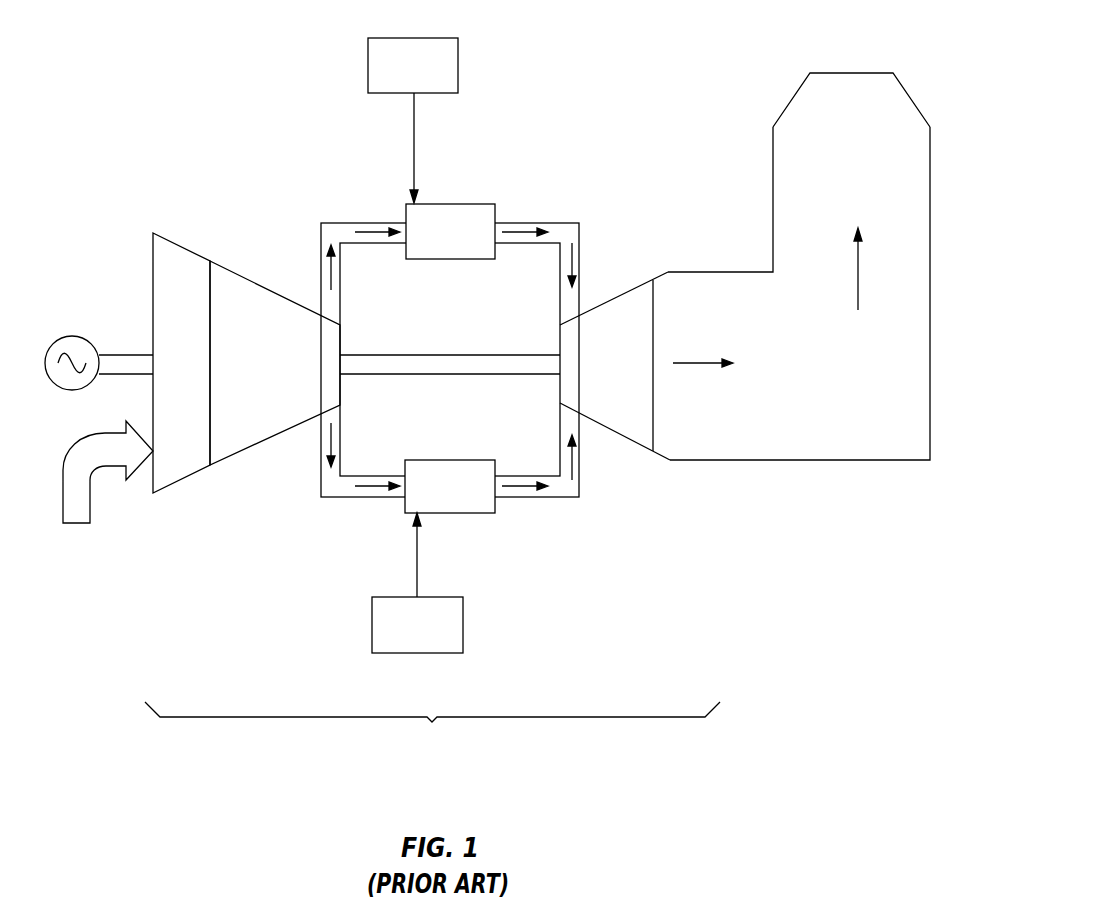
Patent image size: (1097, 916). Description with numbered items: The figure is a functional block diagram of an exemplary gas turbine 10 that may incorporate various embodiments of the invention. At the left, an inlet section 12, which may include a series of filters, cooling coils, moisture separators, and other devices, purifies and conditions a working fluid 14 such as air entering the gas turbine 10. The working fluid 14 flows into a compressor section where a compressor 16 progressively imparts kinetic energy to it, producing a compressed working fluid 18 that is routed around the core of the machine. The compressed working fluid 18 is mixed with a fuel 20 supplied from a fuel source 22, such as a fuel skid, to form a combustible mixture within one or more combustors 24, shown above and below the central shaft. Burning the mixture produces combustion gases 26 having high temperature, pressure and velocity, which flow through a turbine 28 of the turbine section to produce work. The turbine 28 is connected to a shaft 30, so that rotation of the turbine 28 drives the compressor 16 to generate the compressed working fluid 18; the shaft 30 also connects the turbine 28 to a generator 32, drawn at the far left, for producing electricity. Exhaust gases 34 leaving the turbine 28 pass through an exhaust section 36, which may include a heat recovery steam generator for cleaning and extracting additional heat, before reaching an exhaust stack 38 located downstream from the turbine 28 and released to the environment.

The gas turbine 10 is at (432, 728).
The inlet section 12 is at (200, 373).
The working fluid 14 is at (72, 525).
The compressor 16 is at (281, 367).
The compressed working fluid 18 is at (321, 278).
The fuel 20 is at (413, 165).
The fuel source 22 is at (425, 78).
The combustors 24 is at (462, 245).
The combustion gases 26 is at (573, 258).
The turbine 28 is at (614, 366).
The shaft 30 is at (447, 376).
The generator 32 is at (78, 338).
The exhaust gases 34 is at (693, 365).
The exhaust section 36 is at (819, 387).
The exhaust stack 38 is at (910, 97).